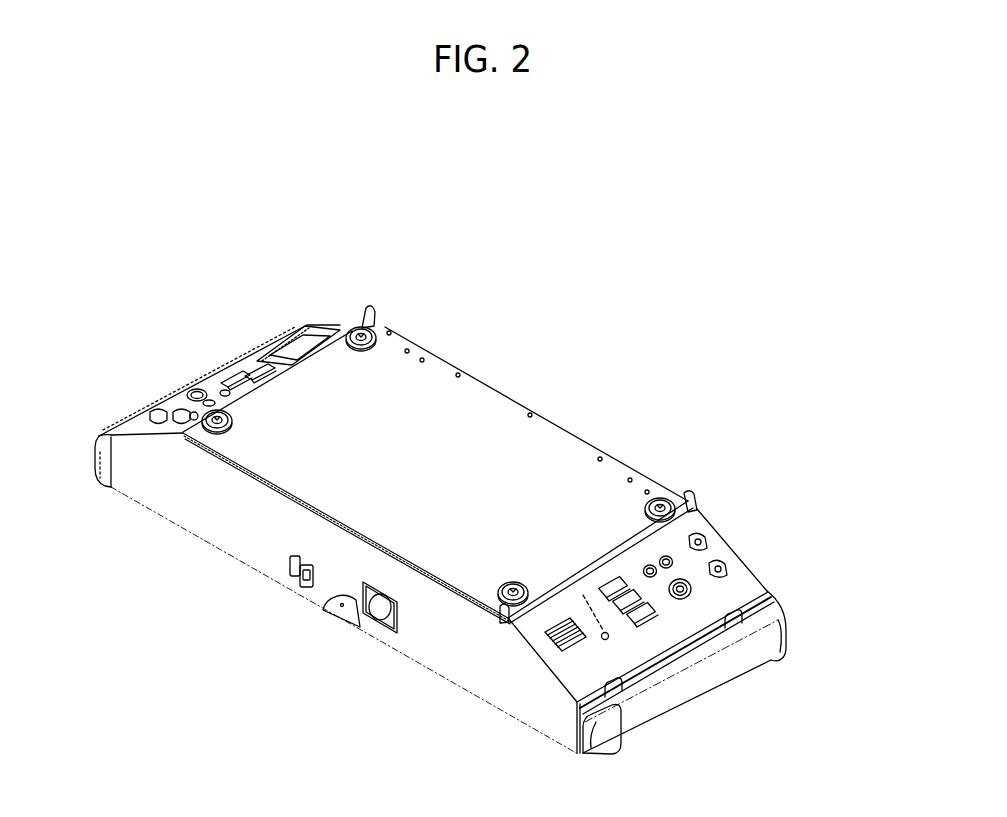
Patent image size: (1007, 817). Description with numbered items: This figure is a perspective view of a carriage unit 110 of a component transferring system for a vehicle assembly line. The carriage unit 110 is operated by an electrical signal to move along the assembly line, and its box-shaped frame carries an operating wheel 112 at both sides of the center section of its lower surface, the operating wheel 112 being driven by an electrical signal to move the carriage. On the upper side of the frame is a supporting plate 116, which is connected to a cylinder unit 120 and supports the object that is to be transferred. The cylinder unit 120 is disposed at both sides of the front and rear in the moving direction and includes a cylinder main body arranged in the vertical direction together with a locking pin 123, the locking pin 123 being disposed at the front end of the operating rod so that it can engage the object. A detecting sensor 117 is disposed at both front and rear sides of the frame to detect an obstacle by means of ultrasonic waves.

The carriage unit 110 is at (511, 322).
The operating wheel 112 is at (333, 593).
The supporting plate 116 is at (557, 445).
The detecting sensor 117 is at (727, 622).
The cylinder unit 120 is at (380, 327).
The locking pin 123 is at (354, 323).